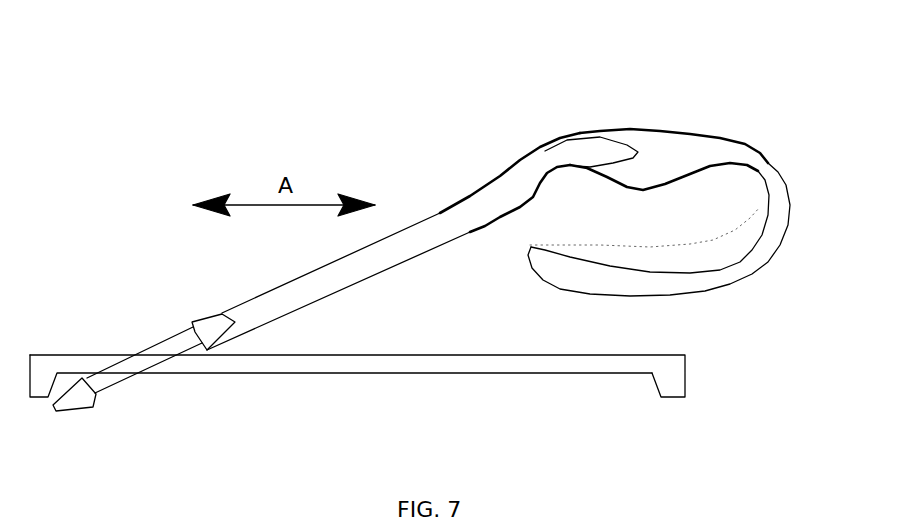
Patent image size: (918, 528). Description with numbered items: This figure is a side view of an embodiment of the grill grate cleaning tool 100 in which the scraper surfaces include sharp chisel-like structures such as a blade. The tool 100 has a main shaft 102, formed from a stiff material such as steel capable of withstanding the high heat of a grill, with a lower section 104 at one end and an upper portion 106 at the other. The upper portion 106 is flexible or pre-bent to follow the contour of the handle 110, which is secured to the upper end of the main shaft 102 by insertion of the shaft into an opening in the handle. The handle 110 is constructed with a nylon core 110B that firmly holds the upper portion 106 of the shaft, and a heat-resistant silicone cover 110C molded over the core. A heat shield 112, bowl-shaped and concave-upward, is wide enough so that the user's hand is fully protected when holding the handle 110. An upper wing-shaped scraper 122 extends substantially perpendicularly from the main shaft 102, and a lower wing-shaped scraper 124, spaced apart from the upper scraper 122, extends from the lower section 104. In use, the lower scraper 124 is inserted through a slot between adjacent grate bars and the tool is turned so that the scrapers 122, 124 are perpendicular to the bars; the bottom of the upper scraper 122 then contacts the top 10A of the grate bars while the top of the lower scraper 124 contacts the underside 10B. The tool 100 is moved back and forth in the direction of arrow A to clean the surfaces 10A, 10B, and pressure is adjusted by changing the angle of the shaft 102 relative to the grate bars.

The tool 100 is at (228, 150).
The main shaft 102 is at (340, 287).
The lower section 104 is at (157, 365).
The upper portion 106 is at (497, 184).
The handle 110 is at (651, 96).
The nylon core 110B is at (688, 148).
The heat-resistant silicone cover 110C is at (632, 127).
The heat shield 112 is at (723, 275).
The upper wing-shaped scraper 122 is at (203, 327).
The lower wing-shaped scraper 124 is at (77, 402).
The top 10A is at (627, 350).
The underside 10B is at (570, 382).